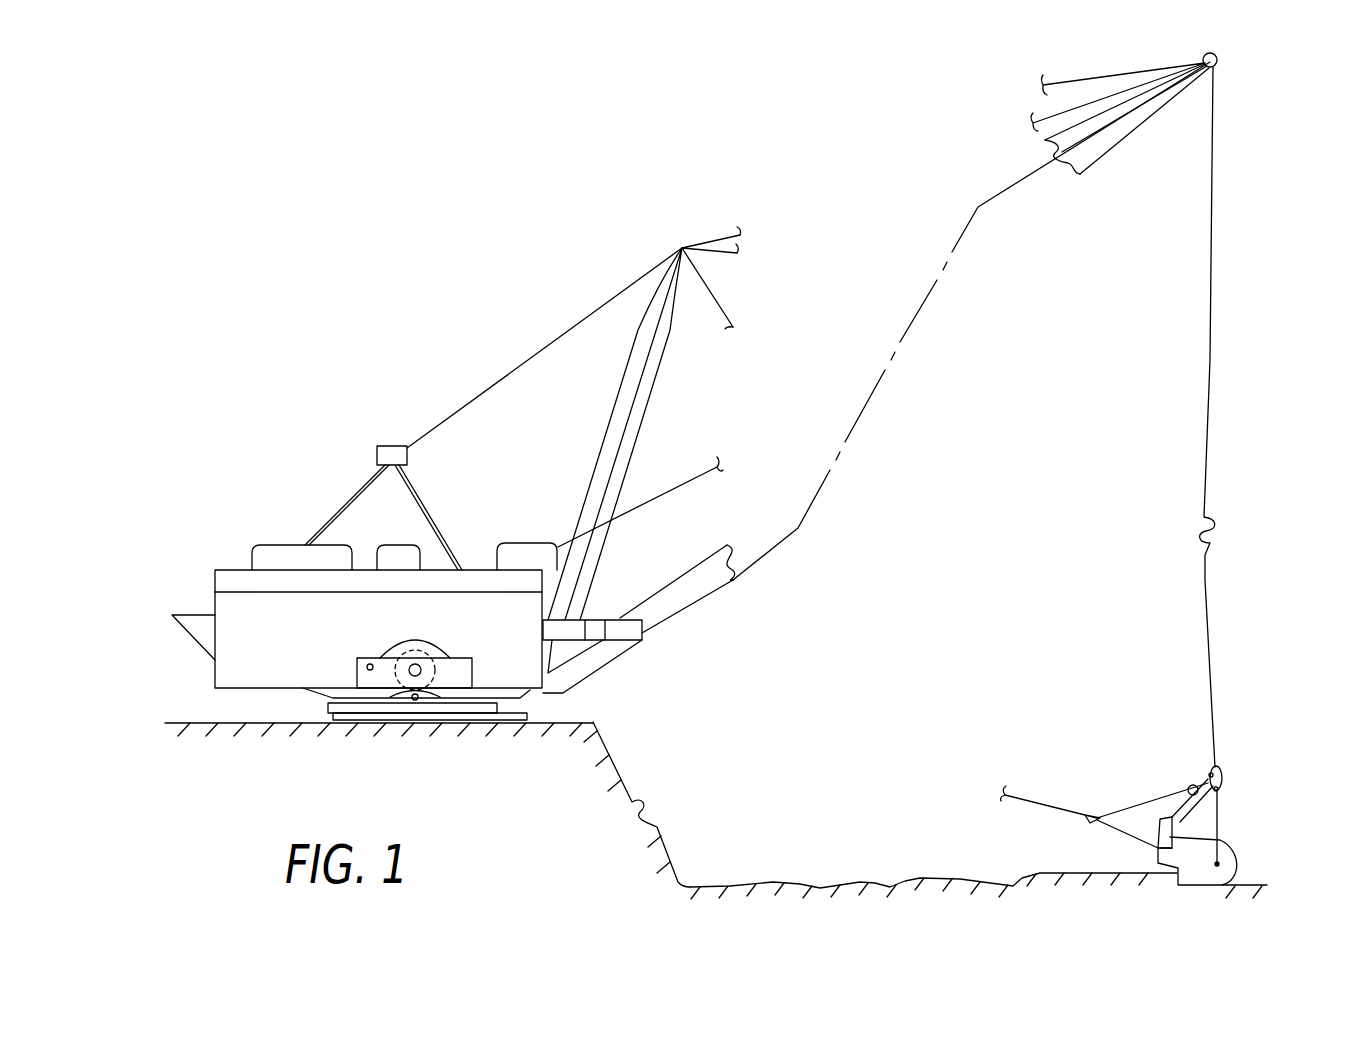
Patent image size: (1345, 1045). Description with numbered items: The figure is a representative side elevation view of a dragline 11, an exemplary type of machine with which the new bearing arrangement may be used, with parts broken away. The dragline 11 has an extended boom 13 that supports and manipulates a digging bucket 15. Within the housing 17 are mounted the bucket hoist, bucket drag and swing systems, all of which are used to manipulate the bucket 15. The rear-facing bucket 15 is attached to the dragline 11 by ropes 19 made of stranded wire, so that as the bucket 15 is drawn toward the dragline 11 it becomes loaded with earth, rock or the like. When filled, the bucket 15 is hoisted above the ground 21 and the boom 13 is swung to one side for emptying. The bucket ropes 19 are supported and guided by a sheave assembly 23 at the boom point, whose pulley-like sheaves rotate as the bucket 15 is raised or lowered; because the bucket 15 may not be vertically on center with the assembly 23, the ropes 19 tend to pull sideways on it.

The dragline 11 is at (289, 522).
The boom 13 is at (1080, 174).
The digging bucket 15 is at (1230, 848).
The housing 17 is at (207, 592).
The ropes 19 is at (1208, 408).
The ground 21 is at (663, 845).
The sheave assembly 23 is at (1218, 60).